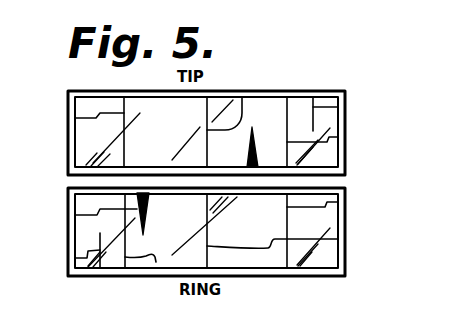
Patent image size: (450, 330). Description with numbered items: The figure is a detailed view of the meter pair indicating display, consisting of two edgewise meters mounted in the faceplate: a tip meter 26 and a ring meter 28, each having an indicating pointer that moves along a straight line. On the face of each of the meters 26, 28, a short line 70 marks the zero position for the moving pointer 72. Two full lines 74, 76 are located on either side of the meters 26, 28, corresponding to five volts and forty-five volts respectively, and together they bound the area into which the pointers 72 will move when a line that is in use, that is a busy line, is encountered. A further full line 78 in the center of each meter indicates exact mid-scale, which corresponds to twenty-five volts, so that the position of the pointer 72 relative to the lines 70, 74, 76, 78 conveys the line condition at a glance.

The tip meter 26 is at (274, 91).
The ring meter 28 is at (263, 270).
The short line 70 is at (338, 107).
The moving pointer 72 is at (257, 150).
The full line 74 is at (338, 137).
The full line 76 is at (75, 118).
The full line 78 is at (242, 97).